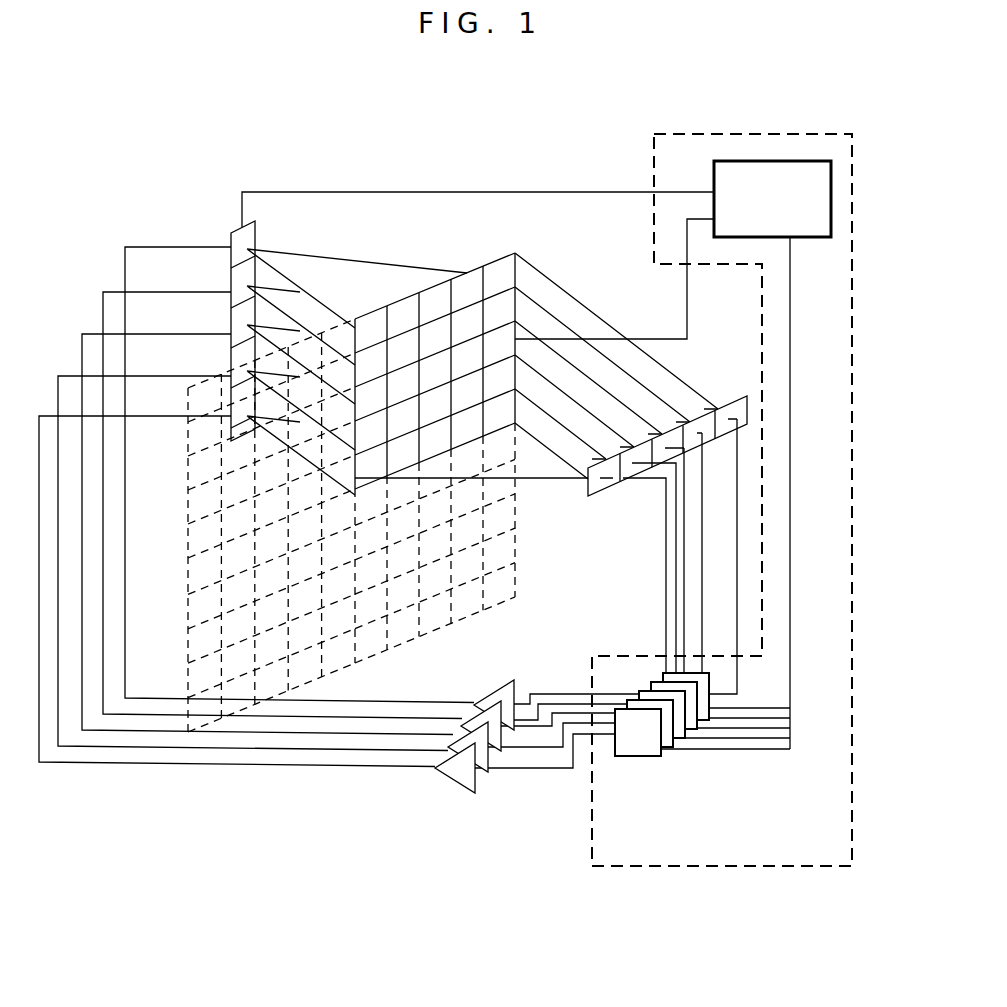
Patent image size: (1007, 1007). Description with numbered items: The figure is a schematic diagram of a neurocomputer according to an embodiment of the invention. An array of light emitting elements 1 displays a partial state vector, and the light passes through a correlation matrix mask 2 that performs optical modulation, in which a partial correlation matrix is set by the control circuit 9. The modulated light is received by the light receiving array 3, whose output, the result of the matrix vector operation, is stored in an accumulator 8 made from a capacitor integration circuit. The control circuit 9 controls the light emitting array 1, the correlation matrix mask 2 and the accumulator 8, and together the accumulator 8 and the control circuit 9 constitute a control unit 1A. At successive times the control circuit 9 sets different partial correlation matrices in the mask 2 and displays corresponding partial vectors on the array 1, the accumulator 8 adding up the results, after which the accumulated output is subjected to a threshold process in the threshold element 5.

The light emitting array 1 is at (258, 222).
The correlation matrix mask 2 is at (516, 256).
The light receiving array 3 is at (727, 404).
The threshold element 5 is at (490, 770).
The accumulator 8 is at (642, 756).
The control circuit 9 is at (750, 160).
The control unit 1A is at (853, 608).